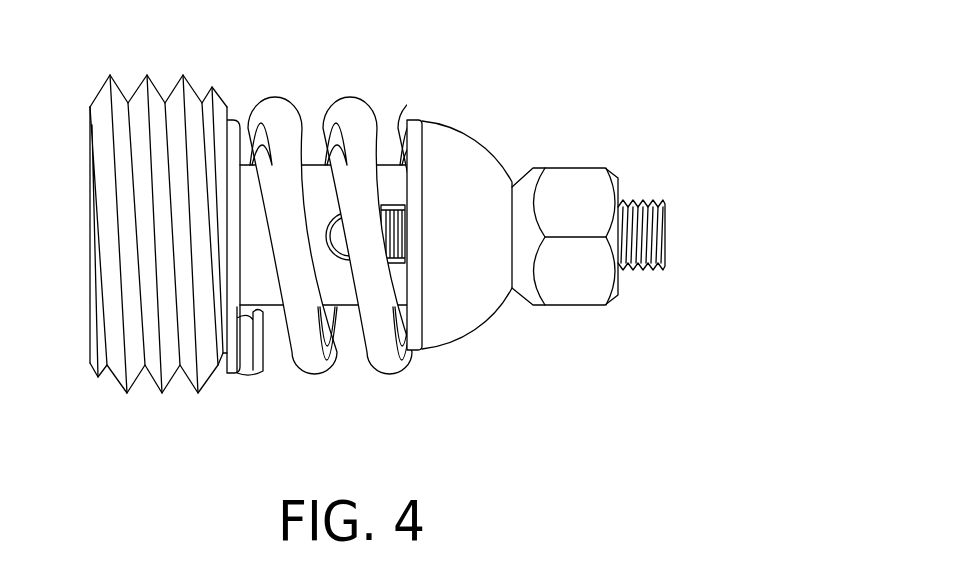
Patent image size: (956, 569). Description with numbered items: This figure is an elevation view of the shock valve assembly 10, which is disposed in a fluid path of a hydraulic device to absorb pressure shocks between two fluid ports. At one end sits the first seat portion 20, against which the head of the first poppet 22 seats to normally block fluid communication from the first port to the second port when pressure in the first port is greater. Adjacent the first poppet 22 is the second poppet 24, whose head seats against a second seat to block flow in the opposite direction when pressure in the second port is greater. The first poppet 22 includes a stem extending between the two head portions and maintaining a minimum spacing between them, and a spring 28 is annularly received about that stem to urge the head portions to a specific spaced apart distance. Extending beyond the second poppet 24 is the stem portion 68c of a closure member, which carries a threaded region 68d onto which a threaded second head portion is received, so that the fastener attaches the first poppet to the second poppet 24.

The shock valve assembly 10 is at (383, 70).
The first seat portion 20 is at (157, 395).
The first poppet 22 is at (234, 117).
The second poppet 24 is at (455, 145).
The spring 28 is at (378, 363).
The stem portion 68c is at (573, 187).
The threaded region 68d is at (656, 230).